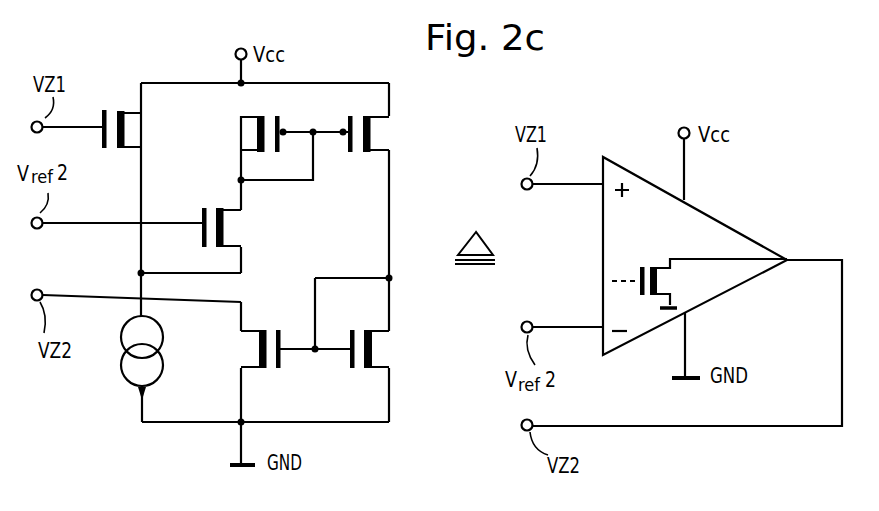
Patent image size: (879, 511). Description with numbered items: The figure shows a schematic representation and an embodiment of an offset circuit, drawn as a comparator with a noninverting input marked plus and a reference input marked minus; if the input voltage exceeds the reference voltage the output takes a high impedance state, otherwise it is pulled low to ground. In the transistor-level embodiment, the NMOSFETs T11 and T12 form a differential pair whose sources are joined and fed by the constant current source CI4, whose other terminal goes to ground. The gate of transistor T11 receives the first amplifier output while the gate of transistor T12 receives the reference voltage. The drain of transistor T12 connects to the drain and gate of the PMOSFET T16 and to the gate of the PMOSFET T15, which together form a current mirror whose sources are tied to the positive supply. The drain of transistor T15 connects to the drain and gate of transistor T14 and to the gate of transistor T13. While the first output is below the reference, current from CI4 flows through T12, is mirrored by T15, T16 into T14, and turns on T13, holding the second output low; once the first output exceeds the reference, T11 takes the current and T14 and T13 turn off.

The NMOSFET T11 is at (110, 108).
The NMOSFET T12 is at (210, 207).
The NMOSFET T13 is at (270, 338).
The NMOSFET T14 is at (355, 363).
The PMOSFET T15 is at (360, 145).
The PMOSFET T16 is at (270, 113).
The constant current source CI4 is at (122, 370).